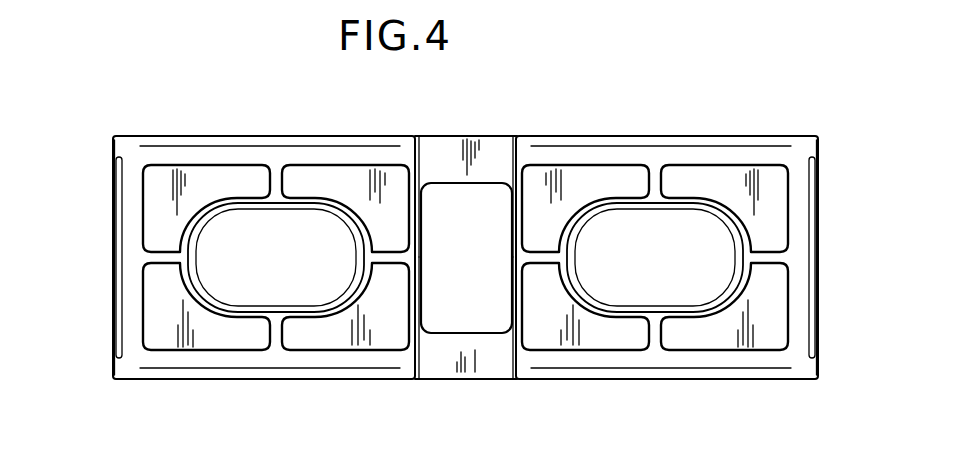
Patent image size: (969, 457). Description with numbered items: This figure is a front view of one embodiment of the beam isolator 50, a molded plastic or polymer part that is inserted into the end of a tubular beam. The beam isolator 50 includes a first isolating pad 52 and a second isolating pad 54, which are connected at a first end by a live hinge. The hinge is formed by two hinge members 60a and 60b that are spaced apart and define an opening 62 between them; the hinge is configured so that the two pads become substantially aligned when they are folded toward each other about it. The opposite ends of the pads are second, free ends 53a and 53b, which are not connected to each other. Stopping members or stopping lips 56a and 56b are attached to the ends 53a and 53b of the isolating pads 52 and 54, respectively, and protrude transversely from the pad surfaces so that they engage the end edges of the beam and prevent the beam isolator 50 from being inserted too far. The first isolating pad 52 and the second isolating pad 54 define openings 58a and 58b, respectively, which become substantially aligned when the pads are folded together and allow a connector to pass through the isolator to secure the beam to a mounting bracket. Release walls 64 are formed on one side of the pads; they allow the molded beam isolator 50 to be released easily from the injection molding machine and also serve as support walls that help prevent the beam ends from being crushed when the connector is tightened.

The beam isolator 50 is at (727, 85).
The first isolating pad 52 is at (705, 380).
The second isolating pad 54 is at (242, 380).
The free end of first isolating pad 53a is at (822, 205).
The free end of second isolating pad 53b is at (112, 195).
The stopping member 56a is at (818, 281).
The stopping member 56b is at (113, 279).
The opening 58a is at (618, 275).
The opening 58b is at (303, 275).
The hinge member 60a is at (453, 152).
The hinge member 60b is at (471, 360).
The opening 62 is at (488, 243).
The release walls 64 is at (388, 252).